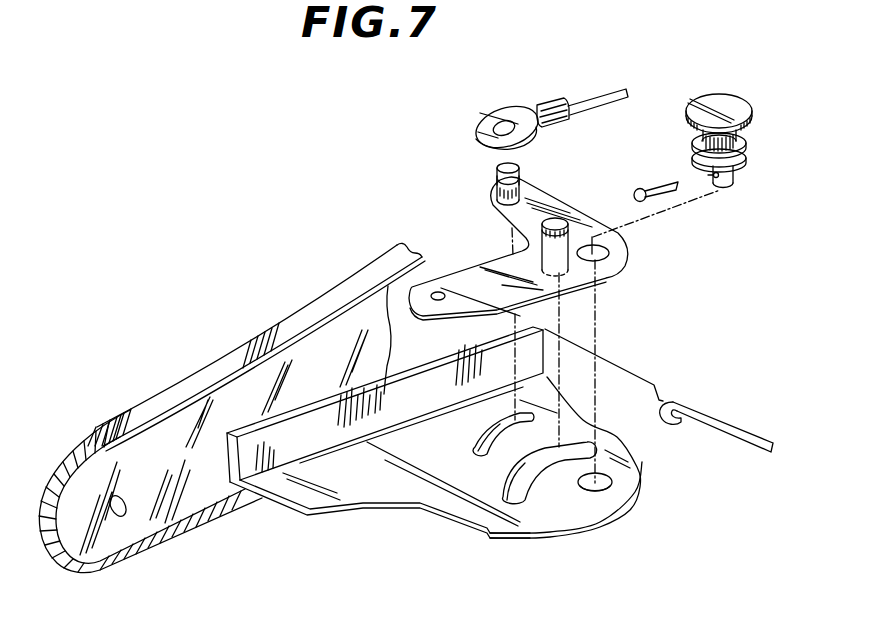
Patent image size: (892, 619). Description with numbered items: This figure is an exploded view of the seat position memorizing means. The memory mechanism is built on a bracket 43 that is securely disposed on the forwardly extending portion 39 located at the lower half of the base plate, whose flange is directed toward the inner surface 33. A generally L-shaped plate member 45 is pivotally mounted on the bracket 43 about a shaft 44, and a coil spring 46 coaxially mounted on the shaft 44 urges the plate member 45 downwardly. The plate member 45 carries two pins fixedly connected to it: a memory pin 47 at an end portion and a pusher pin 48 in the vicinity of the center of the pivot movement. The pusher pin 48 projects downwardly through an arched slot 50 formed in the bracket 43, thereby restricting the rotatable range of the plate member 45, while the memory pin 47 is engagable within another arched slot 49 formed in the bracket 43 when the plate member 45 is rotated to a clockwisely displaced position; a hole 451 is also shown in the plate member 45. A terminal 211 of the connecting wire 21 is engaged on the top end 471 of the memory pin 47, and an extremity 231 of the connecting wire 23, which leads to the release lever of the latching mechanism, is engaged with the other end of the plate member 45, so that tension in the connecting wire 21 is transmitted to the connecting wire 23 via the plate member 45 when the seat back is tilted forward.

The connecting wire 21 is at (510, 105).
The terminal 211 is at (478, 122).
The connecting wire 23 is at (716, 421).
The extremity 231 is at (670, 430).
The inner surface 33 is at (363, 337).
The forwardly extending portion 39 is at (182, 500).
The bracket 43 is at (434, 455).
The shaft 44 is at (723, 110).
The plate member 45 is at (514, 250).
The hole in lever plate 451 is at (436, 301).
The coil spring 46 is at (748, 156).
The memory pin 47 is at (493, 201).
The top end 471 is at (537, 160).
The pusher pin 48 is at (596, 275).
The arched slot 49 is at (469, 443).
The arched slot 50 is at (490, 520).